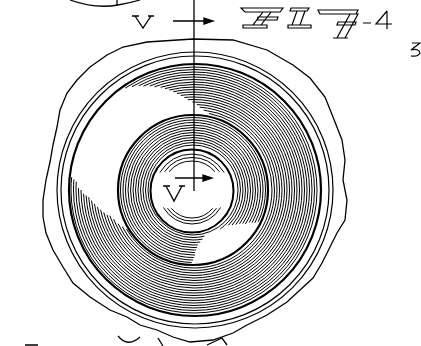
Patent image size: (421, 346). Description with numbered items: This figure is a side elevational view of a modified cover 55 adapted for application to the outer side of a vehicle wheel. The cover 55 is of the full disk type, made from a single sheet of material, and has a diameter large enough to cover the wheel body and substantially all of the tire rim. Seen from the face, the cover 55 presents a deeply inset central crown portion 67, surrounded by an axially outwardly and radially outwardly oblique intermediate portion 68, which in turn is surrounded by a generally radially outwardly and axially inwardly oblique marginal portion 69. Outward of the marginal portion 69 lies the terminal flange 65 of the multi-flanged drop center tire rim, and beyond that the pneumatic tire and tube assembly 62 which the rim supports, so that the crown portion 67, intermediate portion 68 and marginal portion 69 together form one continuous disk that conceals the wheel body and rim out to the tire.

The pneumatic tire and tube assembly 62 is at (312, 102).
The cover 55 is at (315, 136).
The terminal flange 65 is at (325, 186).
The marginal portion 69 is at (285, 252).
The intermediate portion 68 is at (226, 252).
The crown portion 67 is at (208, 212).